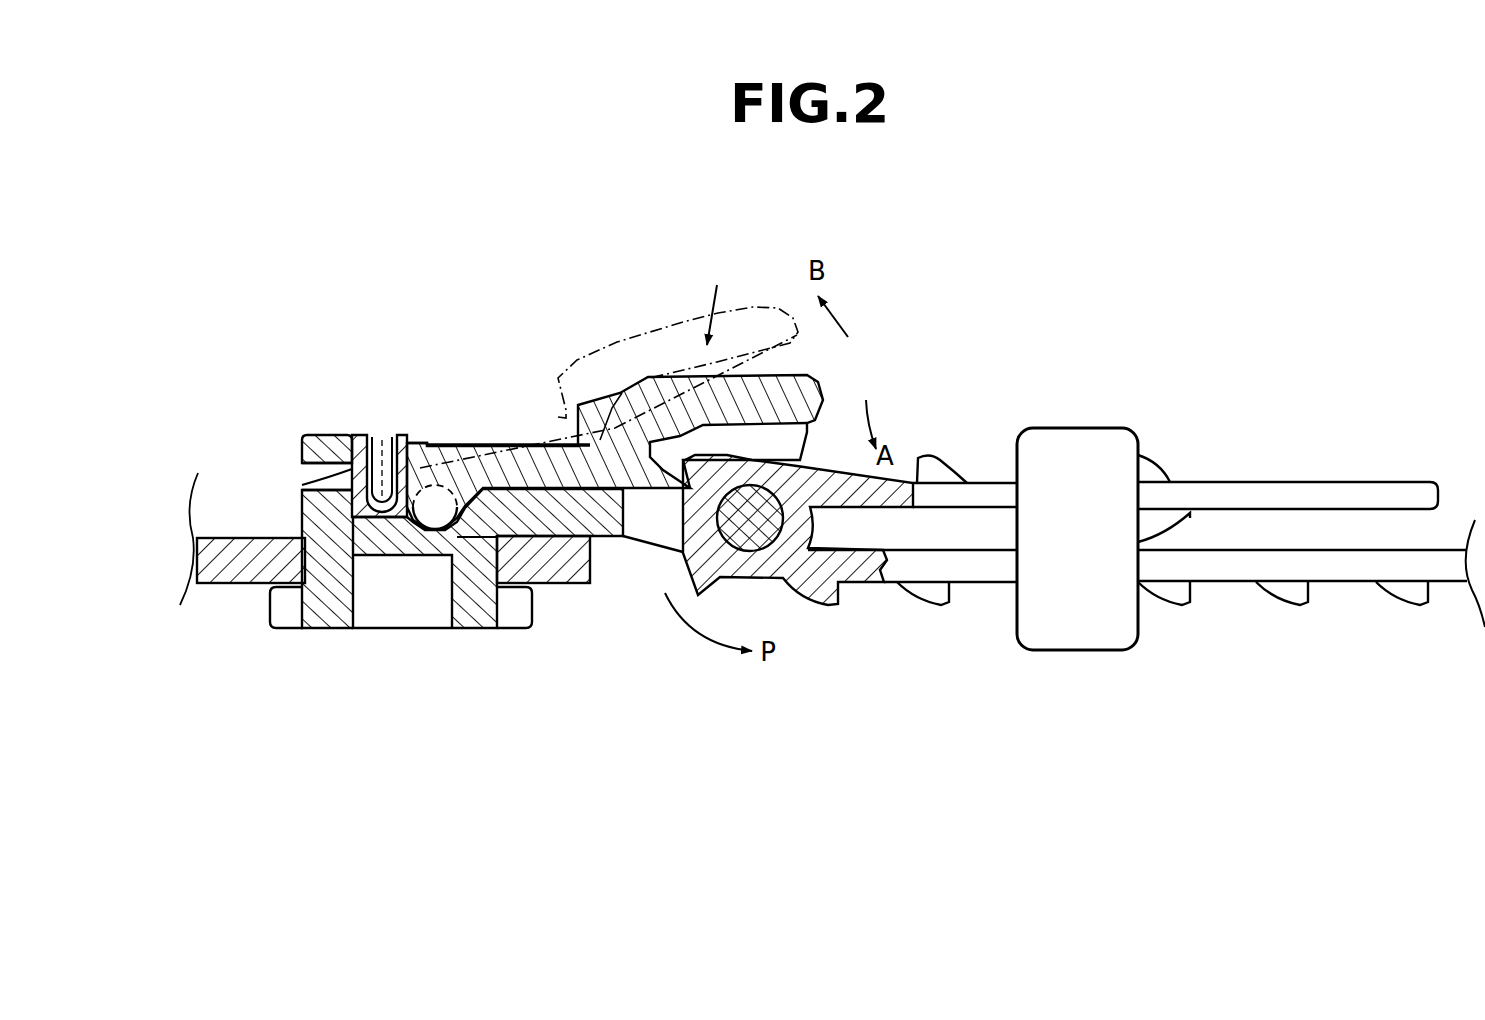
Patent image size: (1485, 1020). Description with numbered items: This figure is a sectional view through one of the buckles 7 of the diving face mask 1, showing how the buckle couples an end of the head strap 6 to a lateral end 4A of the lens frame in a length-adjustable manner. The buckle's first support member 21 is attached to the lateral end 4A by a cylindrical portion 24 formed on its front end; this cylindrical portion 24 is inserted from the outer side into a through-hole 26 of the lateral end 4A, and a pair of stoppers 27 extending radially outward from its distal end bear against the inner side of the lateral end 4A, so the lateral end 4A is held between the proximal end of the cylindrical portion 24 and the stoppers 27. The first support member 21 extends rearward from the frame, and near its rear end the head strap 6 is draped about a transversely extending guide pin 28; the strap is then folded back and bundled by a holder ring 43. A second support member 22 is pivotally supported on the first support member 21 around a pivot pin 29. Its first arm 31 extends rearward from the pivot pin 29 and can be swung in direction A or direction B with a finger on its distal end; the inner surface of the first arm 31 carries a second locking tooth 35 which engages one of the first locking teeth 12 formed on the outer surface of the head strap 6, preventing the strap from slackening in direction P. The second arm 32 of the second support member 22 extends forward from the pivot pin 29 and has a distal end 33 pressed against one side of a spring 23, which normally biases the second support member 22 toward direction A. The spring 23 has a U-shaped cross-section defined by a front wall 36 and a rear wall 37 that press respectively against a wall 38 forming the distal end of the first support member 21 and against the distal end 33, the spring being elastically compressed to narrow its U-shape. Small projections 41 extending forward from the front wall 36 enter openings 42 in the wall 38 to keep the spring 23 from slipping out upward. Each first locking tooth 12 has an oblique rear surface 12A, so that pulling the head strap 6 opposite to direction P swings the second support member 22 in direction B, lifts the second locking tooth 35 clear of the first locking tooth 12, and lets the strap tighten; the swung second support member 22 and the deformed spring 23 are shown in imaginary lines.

The face mask 1 is at (976, 281).
The lateral end 4A is at (208, 588).
The head strap 6 is at (1285, 476).
The buckle 7 is at (712, 297).
The first locking teeth 12 is at (930, 457).
The oblique rear surface 12A is at (955, 475).
The first support member 21 is at (652, 550).
The second support member 22 is at (658, 370).
The spring 23 is at (400, 428).
The cylindrical portion 24 is at (475, 618).
The through-hole 26 is at (325, 600).
The stoppers 27 is at (278, 618).
The guide pin 28 is at (773, 522).
The pivot pin 29 is at (424, 518).
The first arm 31 is at (763, 303).
The second arm 32 is at (425, 441).
The distal end 33 is at (407, 438).
The second locking tooth 35 is at (658, 480).
The front wall 36 is at (357, 437).
The rear wall 37 is at (378, 435).
The wall 38 is at (308, 440).
The small projections 41 is at (305, 485).
The openings 42 is at (305, 470).
The holder ring 43 is at (1072, 650).